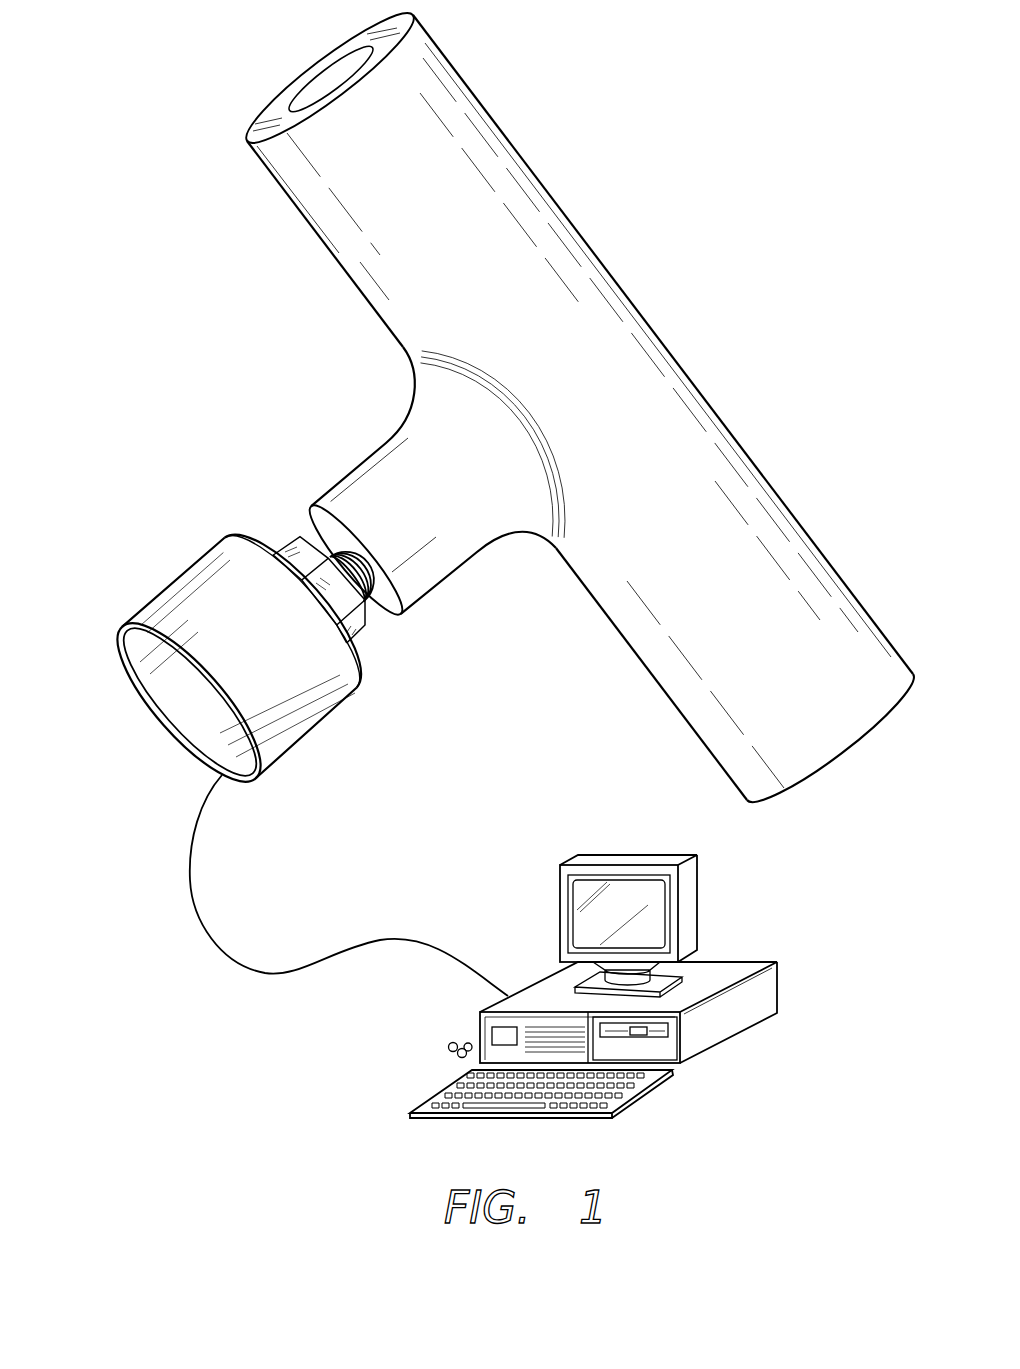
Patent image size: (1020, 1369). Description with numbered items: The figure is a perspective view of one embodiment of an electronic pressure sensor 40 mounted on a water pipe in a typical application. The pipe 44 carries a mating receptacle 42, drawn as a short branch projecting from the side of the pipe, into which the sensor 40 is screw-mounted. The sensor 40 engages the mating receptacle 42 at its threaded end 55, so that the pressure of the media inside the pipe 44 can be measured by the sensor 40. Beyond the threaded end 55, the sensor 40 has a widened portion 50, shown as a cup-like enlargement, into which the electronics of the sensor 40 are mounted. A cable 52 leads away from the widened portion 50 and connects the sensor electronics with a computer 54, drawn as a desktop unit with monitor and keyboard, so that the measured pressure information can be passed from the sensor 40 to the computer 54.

The pressure sensor 40 is at (505, 407).
The mating receptacle 42 is at (430, 567).
The pipe 44 is at (575, 317).
The widened portion 50 is at (225, 593).
The cable 52 is at (240, 963).
The computer 54 is at (647, 853).
The threaded end 55 is at (317, 538).